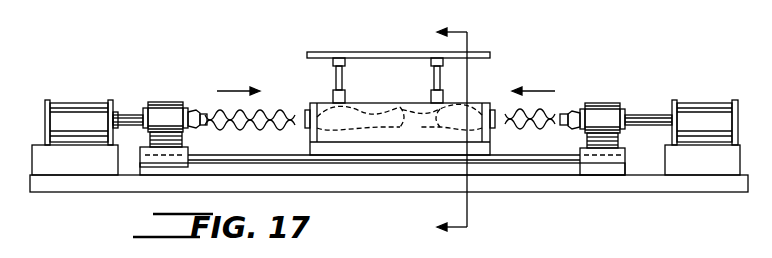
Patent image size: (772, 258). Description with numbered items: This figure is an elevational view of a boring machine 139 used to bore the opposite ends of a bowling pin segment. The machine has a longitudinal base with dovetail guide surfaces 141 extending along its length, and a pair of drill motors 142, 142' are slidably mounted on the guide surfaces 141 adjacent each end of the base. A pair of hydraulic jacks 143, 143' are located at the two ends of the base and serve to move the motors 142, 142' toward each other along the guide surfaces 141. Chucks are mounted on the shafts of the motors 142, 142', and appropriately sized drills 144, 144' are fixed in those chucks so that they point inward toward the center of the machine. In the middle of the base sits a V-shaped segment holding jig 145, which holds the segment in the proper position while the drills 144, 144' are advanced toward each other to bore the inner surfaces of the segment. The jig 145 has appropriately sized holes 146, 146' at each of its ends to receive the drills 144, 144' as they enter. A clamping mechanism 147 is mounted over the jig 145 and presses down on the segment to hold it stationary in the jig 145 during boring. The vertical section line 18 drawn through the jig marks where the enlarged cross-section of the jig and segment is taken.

The section line 18— 18 is at (437, 130).
The boring machine 139 is at (598, 123).
The dovetail guide surfaces 141 is at (205, 163).
The drill motor 142 is at (173, 120).
The drill motor 142' is at (590, 123).
The hydraulic jack 143 is at (87, 124).
The hydraulic jack 143' is at (682, 123).
The drill 144 is at (262, 102).
The drill 144' is at (556, 159).
The V-shaped segment holding jig 145 is at (483, 103).
The hole 146 is at (336, 129).
The hole 146' is at (470, 127).
The clamping mechanism 147 is at (346, 77).